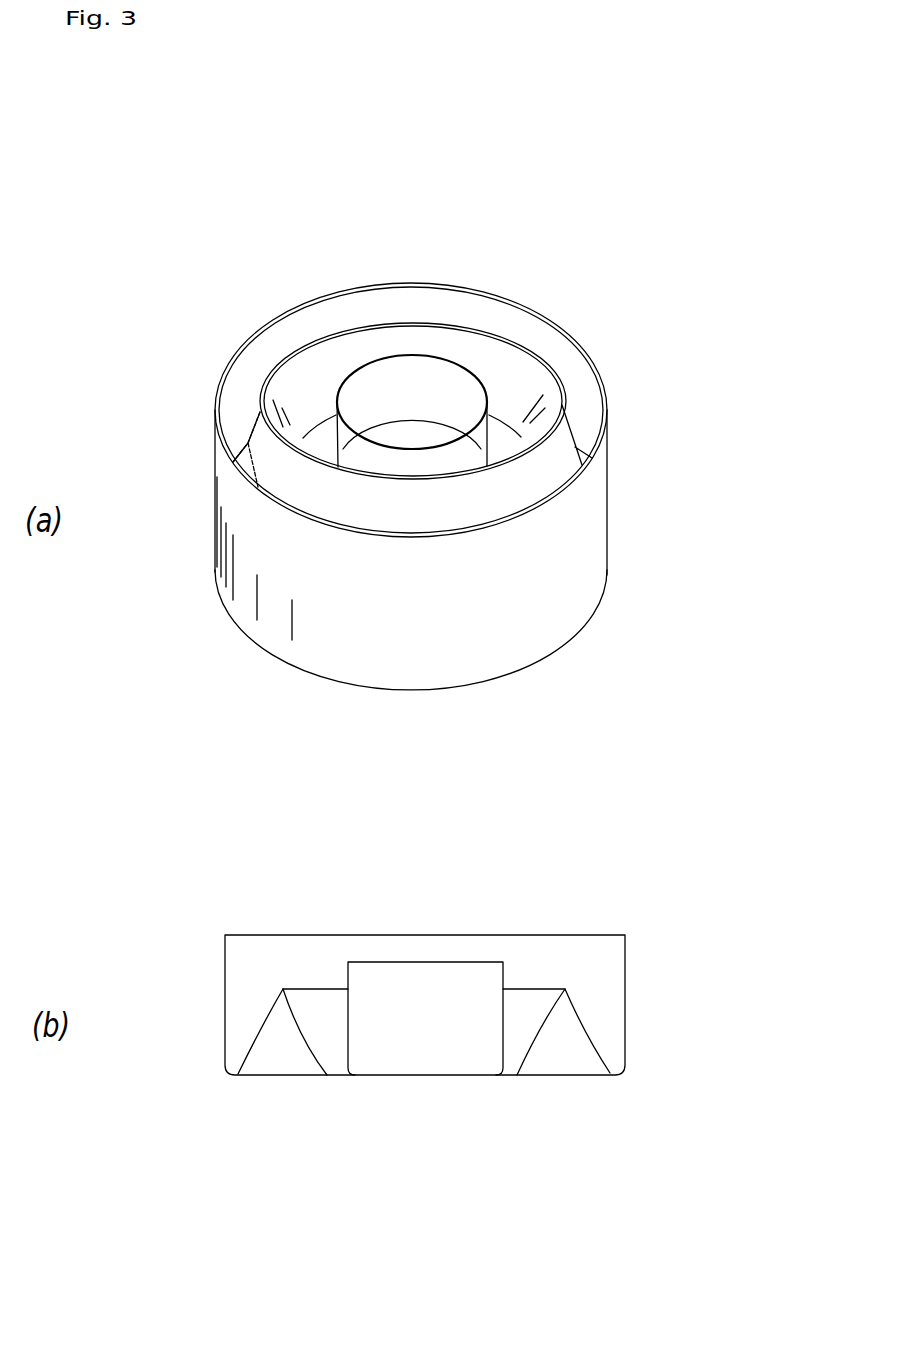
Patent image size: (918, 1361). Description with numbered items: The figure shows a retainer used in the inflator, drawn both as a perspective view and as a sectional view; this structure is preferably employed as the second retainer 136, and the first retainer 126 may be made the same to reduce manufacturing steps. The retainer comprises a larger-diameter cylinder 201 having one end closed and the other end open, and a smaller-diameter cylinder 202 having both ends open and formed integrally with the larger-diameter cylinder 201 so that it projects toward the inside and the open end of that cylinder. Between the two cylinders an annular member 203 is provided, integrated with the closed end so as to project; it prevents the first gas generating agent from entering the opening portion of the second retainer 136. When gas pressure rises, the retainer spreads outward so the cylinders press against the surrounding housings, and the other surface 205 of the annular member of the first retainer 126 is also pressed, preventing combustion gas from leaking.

The first retainer 126 is at (515, 282).
The second retainer 136 is at (462, 662).
The larger-diameter cylinder 201 is at (563, 570).
The smaller-diameter cylinder 202 is at (354, 365).
The annular member 203 is at (535, 356).
The other surface of the annular member 205 is at (258, 1040).